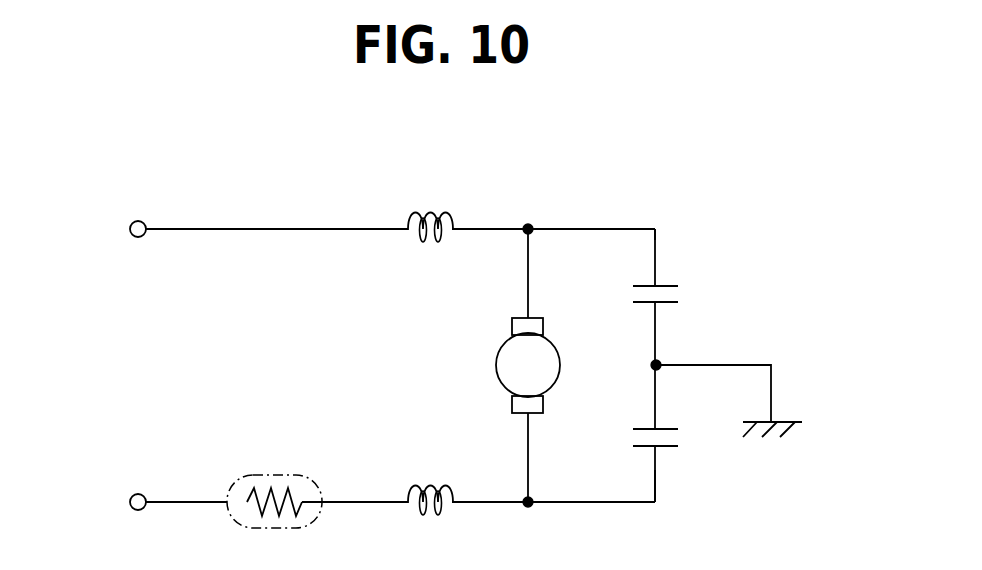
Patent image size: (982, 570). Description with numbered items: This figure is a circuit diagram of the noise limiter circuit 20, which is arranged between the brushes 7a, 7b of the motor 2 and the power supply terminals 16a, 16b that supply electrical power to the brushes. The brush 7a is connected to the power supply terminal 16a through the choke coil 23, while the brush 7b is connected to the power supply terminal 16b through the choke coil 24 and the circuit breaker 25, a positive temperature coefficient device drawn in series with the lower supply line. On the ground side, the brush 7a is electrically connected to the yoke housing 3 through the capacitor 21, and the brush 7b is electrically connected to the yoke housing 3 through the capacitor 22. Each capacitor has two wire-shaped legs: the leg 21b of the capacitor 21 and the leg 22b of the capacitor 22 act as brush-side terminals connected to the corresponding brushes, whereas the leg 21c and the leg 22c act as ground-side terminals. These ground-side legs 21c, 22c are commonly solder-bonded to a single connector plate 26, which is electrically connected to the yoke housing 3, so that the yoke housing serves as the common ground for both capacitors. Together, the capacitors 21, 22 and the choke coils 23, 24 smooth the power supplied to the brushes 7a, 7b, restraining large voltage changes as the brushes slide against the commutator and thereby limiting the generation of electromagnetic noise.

The power supply terminal 16a is at (134, 222).
The power supply terminal 16b is at (134, 495).
The choke coil 23 is at (432, 210).
The choke coil 24 is at (438, 487).
The circuit breaker 25 is at (278, 474).
The motor 2 is at (560, 365).
The brush 7a is at (543, 326).
The brush 7b is at (543, 400).
The noise limiter circuit 20 is at (626, 196).
The capacitor 21 is at (666, 285).
The leg 21b is at (657, 243).
The leg 21c is at (657, 320).
The capacitor 22 is at (663, 428).
The leg 22b is at (657, 474).
The leg 22c is at (657, 384).
The connector plate 26 is at (757, 365).
The yoke housing 3 is at (790, 420).